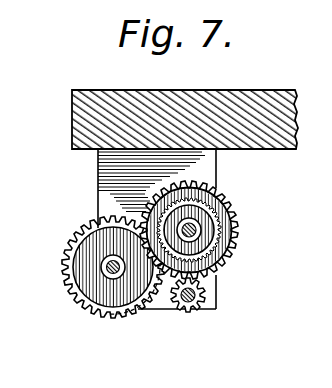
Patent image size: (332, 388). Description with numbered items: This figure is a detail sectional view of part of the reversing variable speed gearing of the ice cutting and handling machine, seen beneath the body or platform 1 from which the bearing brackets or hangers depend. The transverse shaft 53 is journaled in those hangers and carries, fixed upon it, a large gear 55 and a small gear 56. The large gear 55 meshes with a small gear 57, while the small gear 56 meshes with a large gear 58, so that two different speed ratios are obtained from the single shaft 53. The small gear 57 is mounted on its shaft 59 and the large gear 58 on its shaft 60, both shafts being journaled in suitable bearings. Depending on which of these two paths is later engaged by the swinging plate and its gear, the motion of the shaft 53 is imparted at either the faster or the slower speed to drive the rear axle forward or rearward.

The body or platform 1 is at (263, 100).
The transverse shaft 53 is at (193, 226).
The large gear 55 is at (233, 210).
The small gear 56 is at (214, 234).
The small gear 57 is at (199, 295).
The large gear 58 is at (80, 238).
The shaft 59 is at (187, 302).
The shaft 60 is at (114, 270).